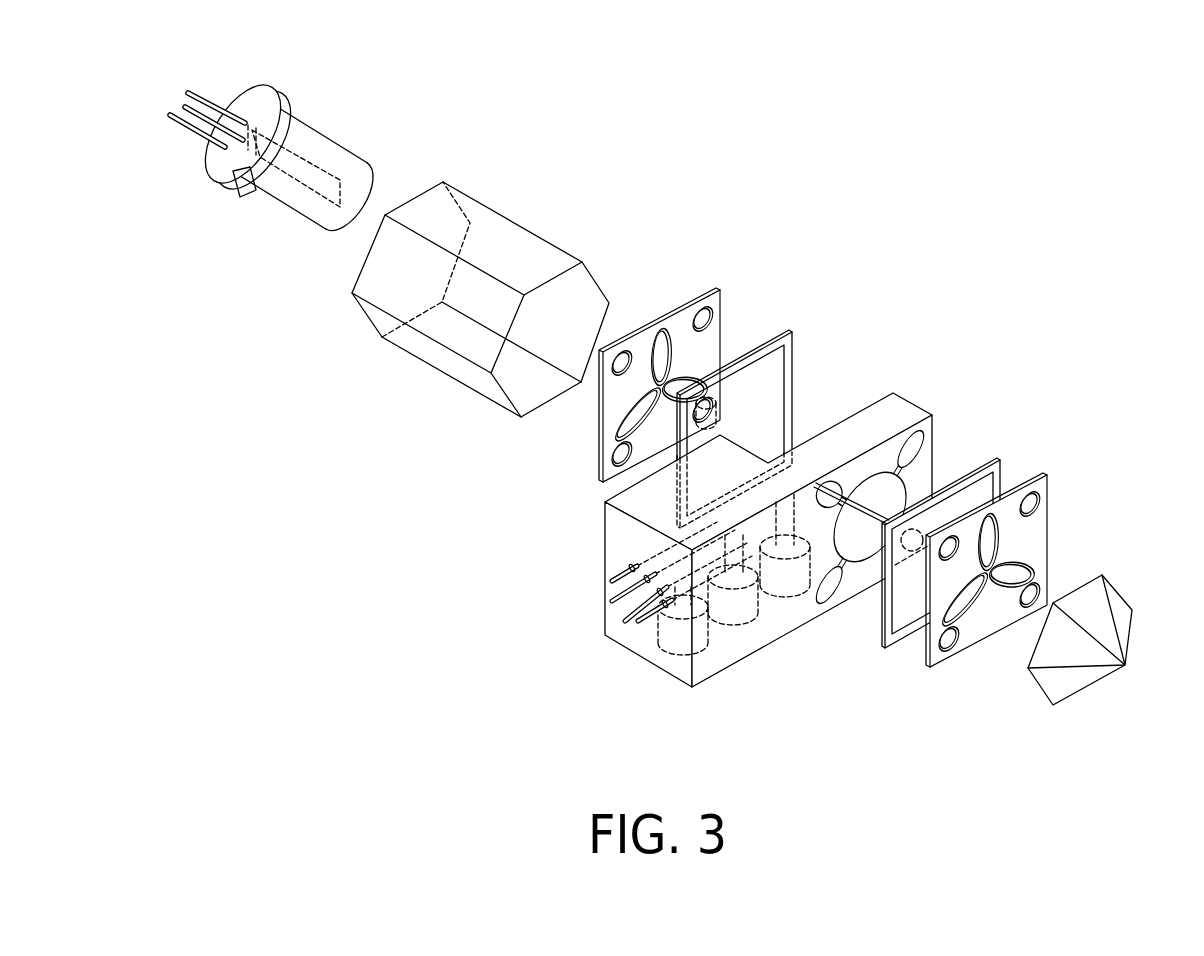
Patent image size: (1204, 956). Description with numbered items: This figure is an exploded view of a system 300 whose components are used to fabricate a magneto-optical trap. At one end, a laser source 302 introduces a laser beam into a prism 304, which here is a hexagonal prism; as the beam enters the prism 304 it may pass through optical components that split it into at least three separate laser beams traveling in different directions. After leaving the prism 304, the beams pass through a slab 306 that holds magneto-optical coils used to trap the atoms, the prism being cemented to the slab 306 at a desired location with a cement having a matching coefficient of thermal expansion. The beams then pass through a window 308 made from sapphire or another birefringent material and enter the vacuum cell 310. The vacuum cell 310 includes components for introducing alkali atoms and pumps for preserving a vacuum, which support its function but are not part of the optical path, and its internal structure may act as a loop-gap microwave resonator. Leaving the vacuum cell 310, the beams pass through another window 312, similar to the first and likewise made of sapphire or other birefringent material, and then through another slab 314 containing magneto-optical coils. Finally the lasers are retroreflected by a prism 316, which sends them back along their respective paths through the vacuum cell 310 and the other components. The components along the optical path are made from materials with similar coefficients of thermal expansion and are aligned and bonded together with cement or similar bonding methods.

The system 300 is at (801, 122).
The laser source 302 is at (333, 165).
The prism 304 is at (515, 228).
The slab 306 is at (728, 322).
The window 308 is at (800, 378).
The vacuum cell 310 is at (933, 440).
The window 312 is at (1005, 470).
The slab 314 is at (1048, 549).
The prism 316 is at (1120, 610).